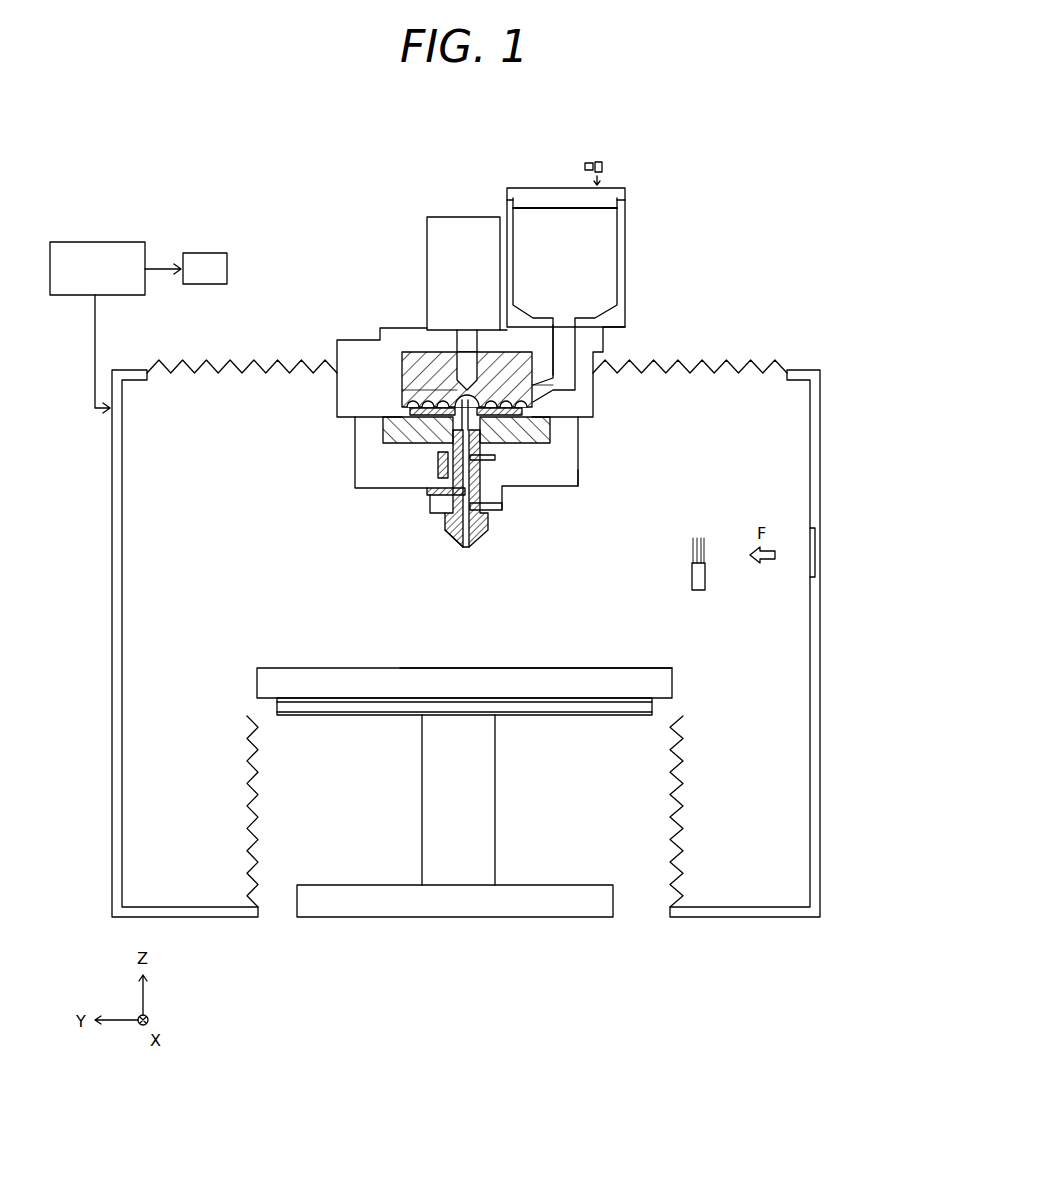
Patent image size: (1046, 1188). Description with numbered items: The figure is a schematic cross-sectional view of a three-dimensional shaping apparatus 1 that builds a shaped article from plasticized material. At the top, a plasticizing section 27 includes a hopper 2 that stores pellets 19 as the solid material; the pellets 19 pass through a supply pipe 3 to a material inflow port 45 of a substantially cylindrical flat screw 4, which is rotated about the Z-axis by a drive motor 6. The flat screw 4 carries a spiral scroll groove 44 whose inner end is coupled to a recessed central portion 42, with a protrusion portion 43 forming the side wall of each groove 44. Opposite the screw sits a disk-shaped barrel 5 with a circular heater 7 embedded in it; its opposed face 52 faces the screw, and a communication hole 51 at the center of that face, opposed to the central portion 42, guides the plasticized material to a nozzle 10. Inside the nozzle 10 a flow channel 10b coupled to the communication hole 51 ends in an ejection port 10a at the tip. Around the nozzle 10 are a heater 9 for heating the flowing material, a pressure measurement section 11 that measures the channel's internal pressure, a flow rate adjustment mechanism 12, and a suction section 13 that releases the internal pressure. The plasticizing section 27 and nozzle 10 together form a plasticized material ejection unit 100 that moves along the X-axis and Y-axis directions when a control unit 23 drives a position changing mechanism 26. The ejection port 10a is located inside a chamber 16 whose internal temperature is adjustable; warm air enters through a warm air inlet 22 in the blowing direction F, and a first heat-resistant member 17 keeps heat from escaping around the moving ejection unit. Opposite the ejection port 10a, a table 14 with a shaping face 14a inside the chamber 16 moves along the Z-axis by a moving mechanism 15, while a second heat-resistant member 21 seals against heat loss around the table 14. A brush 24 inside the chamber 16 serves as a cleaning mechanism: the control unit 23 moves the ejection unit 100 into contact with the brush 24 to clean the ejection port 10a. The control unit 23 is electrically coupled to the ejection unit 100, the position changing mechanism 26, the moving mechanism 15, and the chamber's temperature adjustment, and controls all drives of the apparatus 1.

The three-dimensional shaping apparatus 1 is at (789, 160).
The plasticized material ejection unit 100 is at (647, 210).
The hopper 2 is at (565, 225).
The pellet 19 is at (600, 160).
The plasticizing section 27 is at (632, 265).
The drive motor 6 is at (457, 238).
The groove 44 is at (440, 404).
The central portion 42 is at (481, 404).
The flat screw 4 is at (440, 383).
The supply pipe 3 is at (565, 365).
The material inflow port 45 is at (560, 400).
The opposed face 52 is at (400, 390).
The protrusion portion 43 is at (408, 412).
The barrel 5 is at (383, 430).
The heater 7 is at (365, 445).
The heater 9 is at (438, 465).
The communication hole 51 is at (495, 457).
The pressure measurement section 11 is at (580, 486).
The flow rate adjustment mechanism 12 is at (428, 492).
The suction section 13 is at (500, 506).
The nozzle 10 is at (440, 520).
The ejection port 10a is at (467, 548).
The flow channel 10b is at (452, 540).
The first heat-resistant member 17 is at (247, 360).
The chamber 16 is at (112, 480).
The warm air inlet 22 is at (816, 556).
The brush 24 is at (707, 575).
The table 14 is at (675, 680).
The shaping face 14a is at (625, 668).
The moving mechanism 15 is at (490, 780).
The second heat-resistant member 21 is at (683, 782).
The control unit 23 is at (95, 241).
The position changing mechanism 26 is at (205, 253).